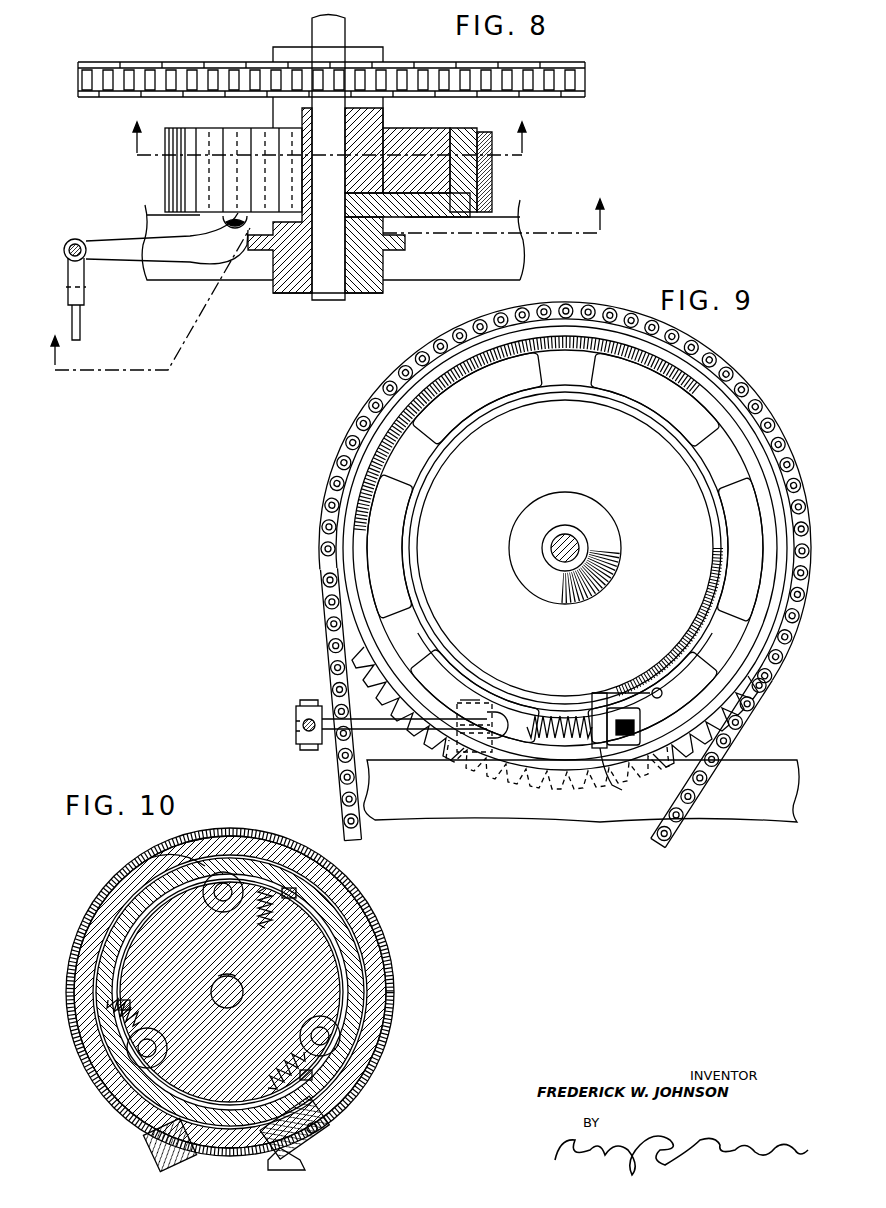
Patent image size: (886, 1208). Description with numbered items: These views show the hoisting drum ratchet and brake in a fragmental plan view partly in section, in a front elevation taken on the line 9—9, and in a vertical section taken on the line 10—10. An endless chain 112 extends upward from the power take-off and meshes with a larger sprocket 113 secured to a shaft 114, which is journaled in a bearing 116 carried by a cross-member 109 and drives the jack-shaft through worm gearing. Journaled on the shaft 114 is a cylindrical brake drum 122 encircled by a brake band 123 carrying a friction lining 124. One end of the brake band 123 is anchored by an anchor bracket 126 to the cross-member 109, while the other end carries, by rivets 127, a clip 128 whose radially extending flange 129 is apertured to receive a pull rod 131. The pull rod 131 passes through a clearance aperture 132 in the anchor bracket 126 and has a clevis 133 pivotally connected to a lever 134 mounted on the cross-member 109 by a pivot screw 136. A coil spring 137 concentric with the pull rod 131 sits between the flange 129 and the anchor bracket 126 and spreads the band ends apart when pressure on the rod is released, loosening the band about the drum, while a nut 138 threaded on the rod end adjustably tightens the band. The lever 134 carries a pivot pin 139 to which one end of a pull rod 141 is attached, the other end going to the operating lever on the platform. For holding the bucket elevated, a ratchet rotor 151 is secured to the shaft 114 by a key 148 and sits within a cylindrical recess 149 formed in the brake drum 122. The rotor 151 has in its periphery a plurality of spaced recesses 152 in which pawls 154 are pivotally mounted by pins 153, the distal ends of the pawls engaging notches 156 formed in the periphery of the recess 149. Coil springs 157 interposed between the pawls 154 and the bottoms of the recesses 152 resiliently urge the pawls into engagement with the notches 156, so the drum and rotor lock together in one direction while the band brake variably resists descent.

In FIG. 8, the section line 9— 9 is at (324, 297).
In FIG. 8, the section line 10— 10 is at (328, 149).
In FIG. 8, the cross-member 109 is at (503, 261).
In FIG. 9, the cross-member 109 is at (558, 813).
In FIG. 8, the endless chain 112 is at (586, 78).
In FIG. 9, the endless chain 112 is at (337, 672).
In FIG. 8, the sprocket 113 is at (380, 52).
In FIG. 9, the sprocket 113 is at (583, 373).
In FIG. 8, the shaft 114 is at (328, 292).
In FIG. 9, the shaft 114 is at (548, 548).
In FIG. 10, the shaft 114 is at (233, 990).
In FIG. 8, the bearing 116 is at (373, 288).
In FIG. 8, the brake drum 122 is at (465, 213).
In FIG. 9, the brake drum 122 is at (585, 460).
In FIG. 10, the brake drum 122 is at (353, 1052).
In FIG. 8, the brake band 123 is at (222, 137).
In FIG. 9, the brake band 123 is at (407, 550).
In FIG. 10, the brake band 123 is at (370, 903).
In FIG. 8, the friction lining 124 is at (481, 136).
In FIG. 9, the friction lining 124 is at (412, 520).
In FIG. 10, the friction lining 124 is at (326, 873).
In FIG. 9, the anchor bracket 126 is at (590, 698).
In FIG. 10, the anchor bracket 126 is at (162, 1158).
In FIG. 9, the rivets 127 is at (662, 690).
In FIG. 10, the rivets 127 is at (325, 1133).
In FIG. 9, the clip 128 is at (640, 693).
In FIG. 10, the clip 128 is at (330, 1120).
In FIG. 9, the flange 129 is at (615, 786).
In FIG. 10, the flange 129 is at (268, 1160).
In FIG. 9, the pull rod 131 is at (632, 718).
In FIG. 9, the clearance aperture 132 is at (500, 771).
In FIG. 9, the clevis 133 is at (470, 700).
In FIG. 8, the lever 134 is at (190, 257).
In FIG. 9, the lever 134 is at (373, 727).
In FIG. 8, the pivot screw 136 is at (237, 222).
In FIG. 9, the pivot screw 136 is at (473, 712).
In FIG. 9, the coil spring 137 is at (555, 738).
In FIG. 9, the nut 138 is at (640, 706).
In FIG. 8, the pivot pin 139 is at (78, 243).
In FIG. 9, the pivot pin 139 is at (308, 712).
In FIG. 8, the pull rod 141 is at (78, 321).
In FIG. 9, the pull rod 141 is at (298, 730).
In FIG. 10, the key 148 is at (226, 974).
In FIG. 8, the cylindrical recess 149 is at (450, 130).
In FIG. 10, the cylindrical recess 149 is at (343, 1000).
In FIG. 8, the ratchet rotor 151 is at (392, 138).
In FIG. 10, the ratchet rotor 151 is at (320, 950).
In FIG. 10, the recesses 152 is at (292, 895).
In FIG. 10, the pins 153 is at (225, 888).
In FIG. 10, the pawls 154 is at (262, 888).
In FIG. 10, the notches 156 is at (203, 863).
In FIG. 10, the coil springs 157 is at (267, 915).